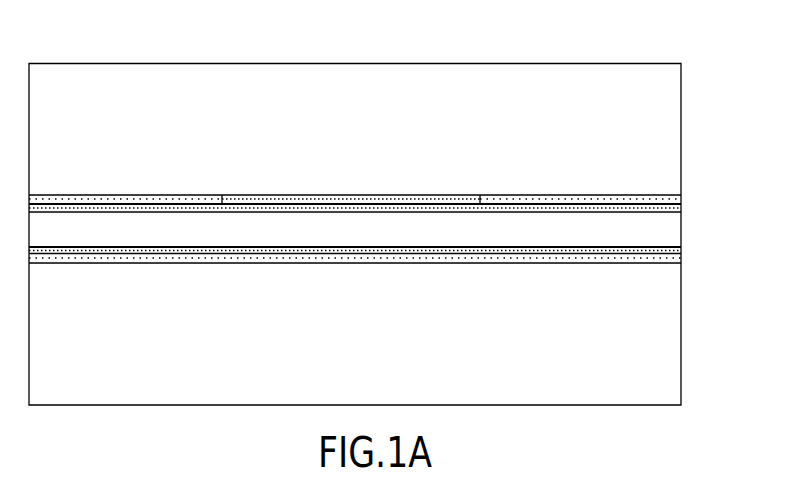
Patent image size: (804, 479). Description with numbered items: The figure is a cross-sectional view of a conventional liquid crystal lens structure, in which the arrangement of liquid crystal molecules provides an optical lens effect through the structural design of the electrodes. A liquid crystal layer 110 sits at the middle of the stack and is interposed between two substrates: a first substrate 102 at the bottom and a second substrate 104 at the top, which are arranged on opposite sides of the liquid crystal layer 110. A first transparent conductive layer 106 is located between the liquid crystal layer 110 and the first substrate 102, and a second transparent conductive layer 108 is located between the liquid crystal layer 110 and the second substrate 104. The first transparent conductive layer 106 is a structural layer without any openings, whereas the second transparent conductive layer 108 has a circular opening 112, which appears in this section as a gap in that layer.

The first substrate 102 is at (672, 333).
The second substrate 104 is at (672, 133).
The first transparent conductive layer 106 is at (672, 261).
The second transparent conductive layer 108 is at (672, 200).
The liquid crystal layer 110 is at (672, 236).
The circular opening 112 is at (249, 196).